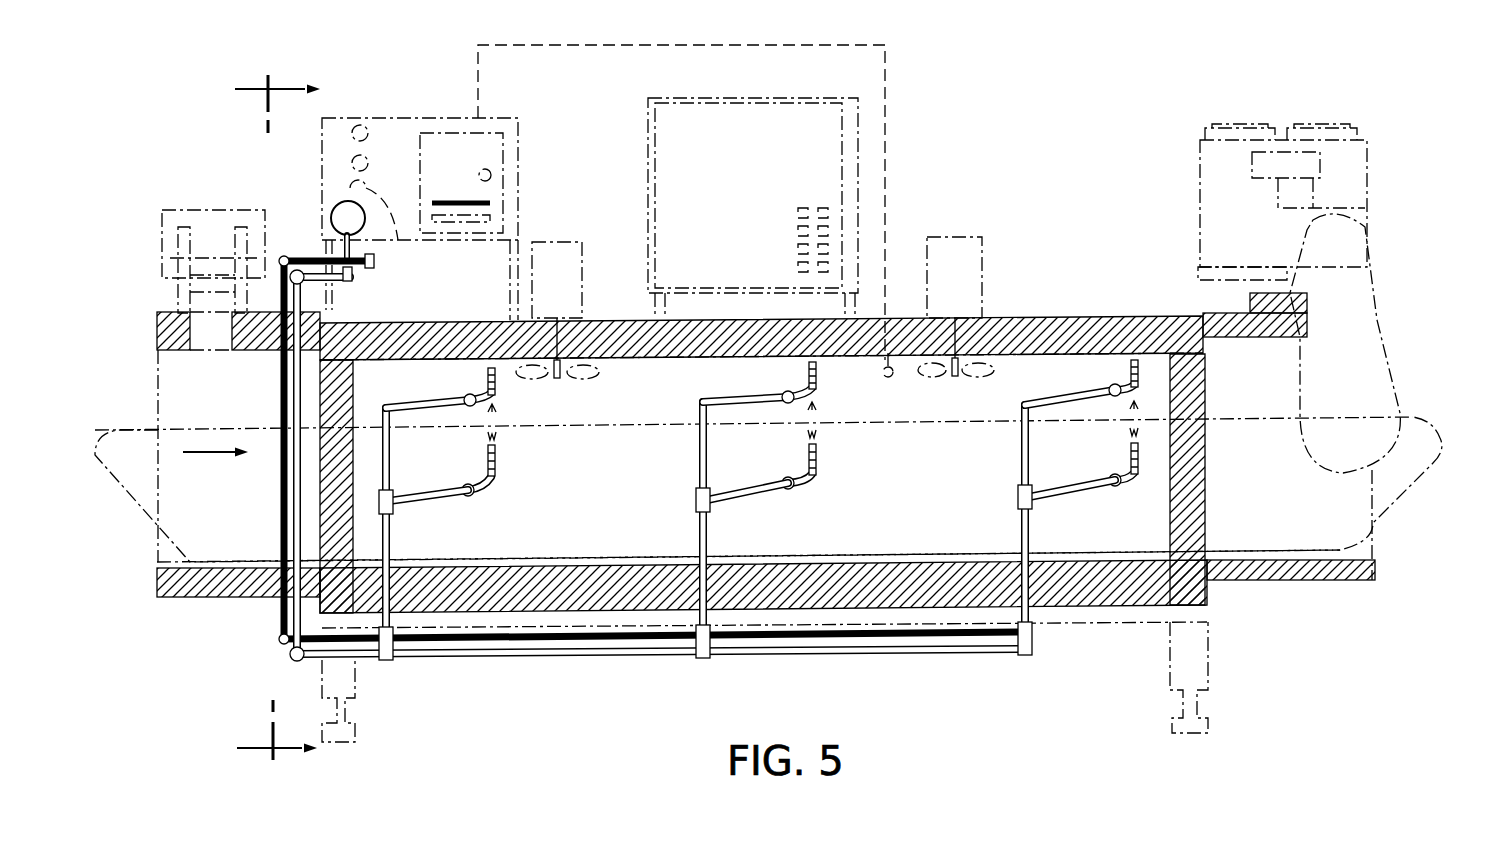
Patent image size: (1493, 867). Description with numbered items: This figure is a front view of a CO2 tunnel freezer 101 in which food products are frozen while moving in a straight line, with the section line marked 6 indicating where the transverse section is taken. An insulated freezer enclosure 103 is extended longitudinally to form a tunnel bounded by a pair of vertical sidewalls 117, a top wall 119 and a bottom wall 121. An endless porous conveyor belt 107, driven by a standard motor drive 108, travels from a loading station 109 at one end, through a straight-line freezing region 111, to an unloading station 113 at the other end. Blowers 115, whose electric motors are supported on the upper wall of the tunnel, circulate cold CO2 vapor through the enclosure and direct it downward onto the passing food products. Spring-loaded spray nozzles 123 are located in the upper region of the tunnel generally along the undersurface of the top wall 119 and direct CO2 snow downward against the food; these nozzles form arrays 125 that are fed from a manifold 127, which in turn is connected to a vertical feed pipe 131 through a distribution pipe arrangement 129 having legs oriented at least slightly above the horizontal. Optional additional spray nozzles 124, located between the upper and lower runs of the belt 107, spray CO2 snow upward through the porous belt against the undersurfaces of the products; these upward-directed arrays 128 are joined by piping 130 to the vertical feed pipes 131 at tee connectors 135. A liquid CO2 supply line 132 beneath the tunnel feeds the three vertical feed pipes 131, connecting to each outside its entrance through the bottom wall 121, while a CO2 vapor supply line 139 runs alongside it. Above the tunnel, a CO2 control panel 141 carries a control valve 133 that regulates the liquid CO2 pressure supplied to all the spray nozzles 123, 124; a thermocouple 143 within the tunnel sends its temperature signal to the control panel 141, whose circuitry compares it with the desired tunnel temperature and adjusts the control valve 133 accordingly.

The section line 6- 6 is at (275, 421).
The CO2 tunnel freezer 101 is at (1012, 182).
The insulated freezer enclosure 103 is at (1160, 317).
The endless conveyor belt 107 is at (590, 424).
The motor drive 108 is at (1305, 127).
The loading station 109 is at (122, 430).
The straight-line freezing region 111 is at (1020, 318).
The unloading station 113 is at (1413, 413).
The blowers 115 is at (583, 307).
The vertical sidewalls 117 is at (943, 517).
The top wall 119 is at (667, 343).
The bottom wall 121 is at (585, 582).
The spray nozzles 123 is at (488, 377).
The additional spray nozzles 124 is at (496, 458).
The arrays of spray nozzles 125 is at (510, 415).
The manifold 127 is at (805, 381).
The arrays of upward-directed nozzles 128 is at (492, 487).
The distribution pipe arrangement 129 is at (397, 403).
The piping 130 is at (435, 503).
The vertical feed pipe 131 is at (393, 477).
The liquid CO2 supply line 132 is at (592, 673).
The control valve 133 is at (336, 206).
The tee connectors 135 is at (392, 513).
The CO2 vapor supply line 139 is at (773, 640).
The CO2 control panel 141 is at (402, 110).
The thermocouple 143 is at (880, 380).